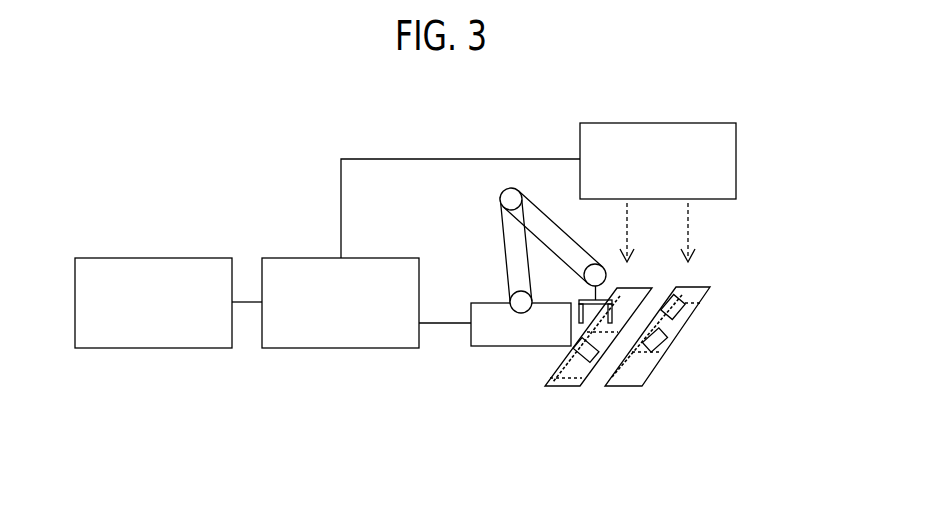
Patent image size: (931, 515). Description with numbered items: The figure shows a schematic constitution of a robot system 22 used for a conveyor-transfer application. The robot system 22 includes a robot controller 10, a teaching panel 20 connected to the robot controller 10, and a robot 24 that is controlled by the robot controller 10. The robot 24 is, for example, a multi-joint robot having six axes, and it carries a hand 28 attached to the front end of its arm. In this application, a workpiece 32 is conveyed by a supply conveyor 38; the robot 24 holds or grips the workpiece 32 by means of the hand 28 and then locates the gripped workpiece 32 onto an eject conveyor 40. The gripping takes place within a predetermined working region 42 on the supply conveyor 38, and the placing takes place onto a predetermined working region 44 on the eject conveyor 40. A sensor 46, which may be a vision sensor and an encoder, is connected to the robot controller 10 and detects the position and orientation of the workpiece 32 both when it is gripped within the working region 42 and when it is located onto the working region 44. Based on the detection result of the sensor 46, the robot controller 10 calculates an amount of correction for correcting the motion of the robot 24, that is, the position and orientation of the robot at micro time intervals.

The robot controller 10 is at (334, 349).
The teaching panel 20 is at (161, 349).
The robot system 22 is at (192, 148).
The robot 24 is at (493, 348).
The hand 28 is at (605, 295).
The workpiece 32 is at (692, 287).
The supply conveyor 38 is at (642, 386).
The eject conveyor 40 is at (573, 387).
The working region 42 is at (677, 328).
The working region 44 is at (560, 389).
The sensor 46 is at (736, 163).